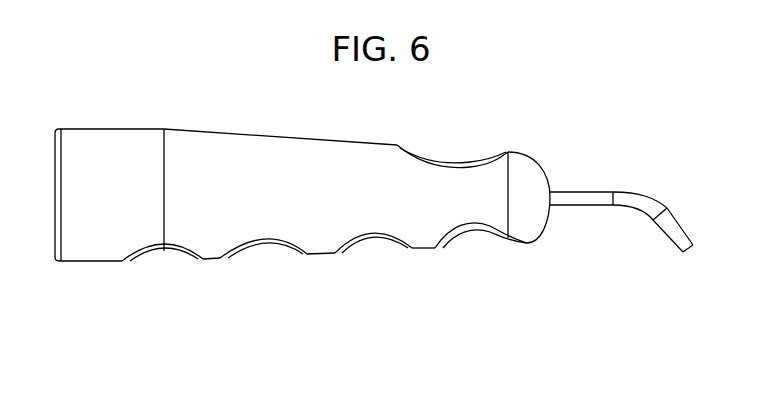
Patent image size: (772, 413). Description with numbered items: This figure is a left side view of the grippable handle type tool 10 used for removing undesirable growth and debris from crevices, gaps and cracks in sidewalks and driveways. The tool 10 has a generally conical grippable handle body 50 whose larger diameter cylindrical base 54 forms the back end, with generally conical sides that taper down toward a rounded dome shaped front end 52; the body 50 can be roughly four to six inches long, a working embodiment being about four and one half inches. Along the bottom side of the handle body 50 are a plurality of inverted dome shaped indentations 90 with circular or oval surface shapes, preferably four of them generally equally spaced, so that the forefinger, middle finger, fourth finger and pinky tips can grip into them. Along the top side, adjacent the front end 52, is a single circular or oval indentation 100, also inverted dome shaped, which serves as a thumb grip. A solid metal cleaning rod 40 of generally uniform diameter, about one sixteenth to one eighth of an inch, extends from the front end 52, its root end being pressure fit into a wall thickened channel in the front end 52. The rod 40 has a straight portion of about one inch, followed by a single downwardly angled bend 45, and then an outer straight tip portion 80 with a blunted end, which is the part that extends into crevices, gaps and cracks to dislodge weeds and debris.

The gripping handle type tool 10 is at (545, 62).
The grippable handle body 50 is at (120, 155).
The cylindrical base 54 is at (75, 219).
The plurality of indentations 90 is at (482, 234).
The single indentation 100 is at (439, 132).
The rounded dome shaped front end 52 is at (558, 177).
The cleaning rod 40 is at (610, 172).
The single downwardly angled bend 45 is at (668, 193).
The straight tip portion 80 is at (642, 250).